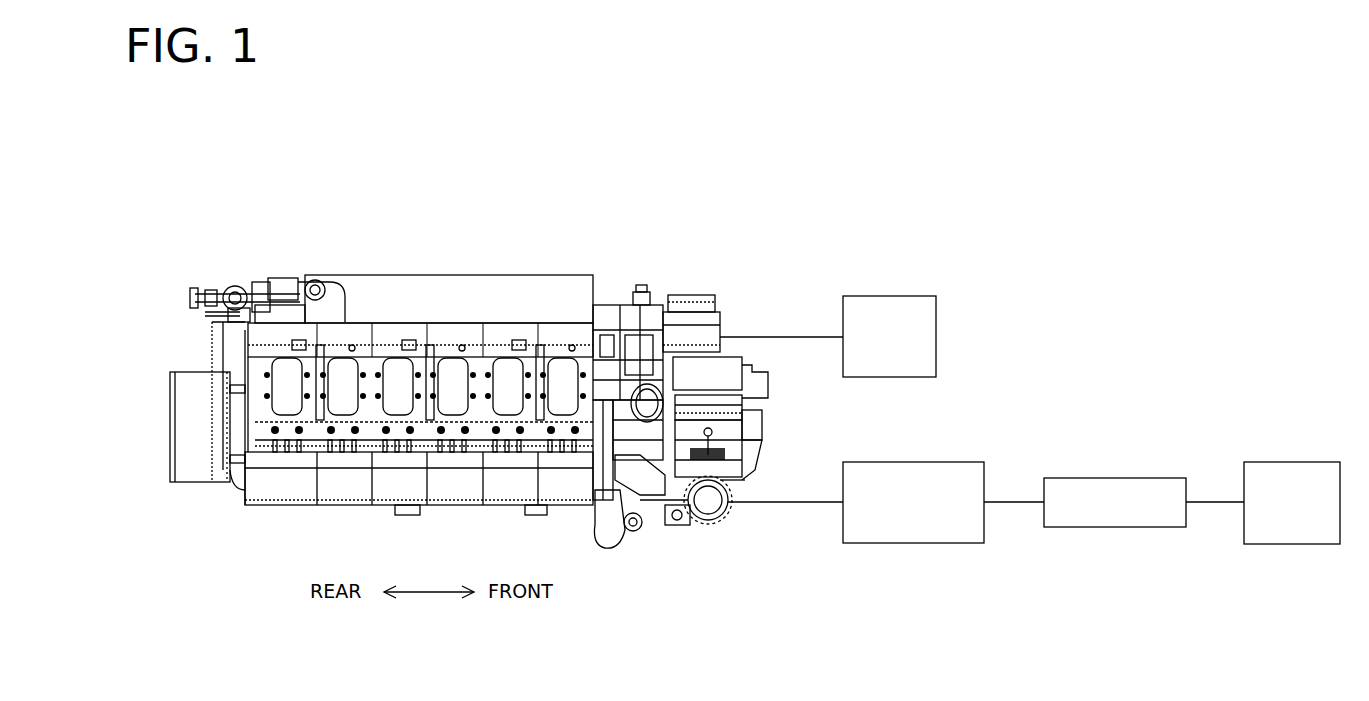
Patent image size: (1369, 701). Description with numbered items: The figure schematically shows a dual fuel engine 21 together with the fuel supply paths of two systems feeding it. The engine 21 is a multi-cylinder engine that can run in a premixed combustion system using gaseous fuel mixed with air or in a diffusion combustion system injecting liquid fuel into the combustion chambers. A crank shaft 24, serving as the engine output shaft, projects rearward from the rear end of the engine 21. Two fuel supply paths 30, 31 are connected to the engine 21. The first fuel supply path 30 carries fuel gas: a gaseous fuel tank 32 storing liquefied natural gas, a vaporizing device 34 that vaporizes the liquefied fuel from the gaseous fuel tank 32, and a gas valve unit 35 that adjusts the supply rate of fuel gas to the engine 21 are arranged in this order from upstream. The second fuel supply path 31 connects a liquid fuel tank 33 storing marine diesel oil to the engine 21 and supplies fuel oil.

The engine 21 is at (463, 250).
The crank shaft 24 is at (233, 425).
The fuel supply path 30 is at (786, 505).
The fuel supply path 31 is at (779, 335).
The gaseous fuel tank 32 is at (1292, 545).
The liquid fuel tank 33 is at (887, 295).
The vaporizing device 34 is at (1114, 528).
The gas valve unit 35 is at (913, 544).